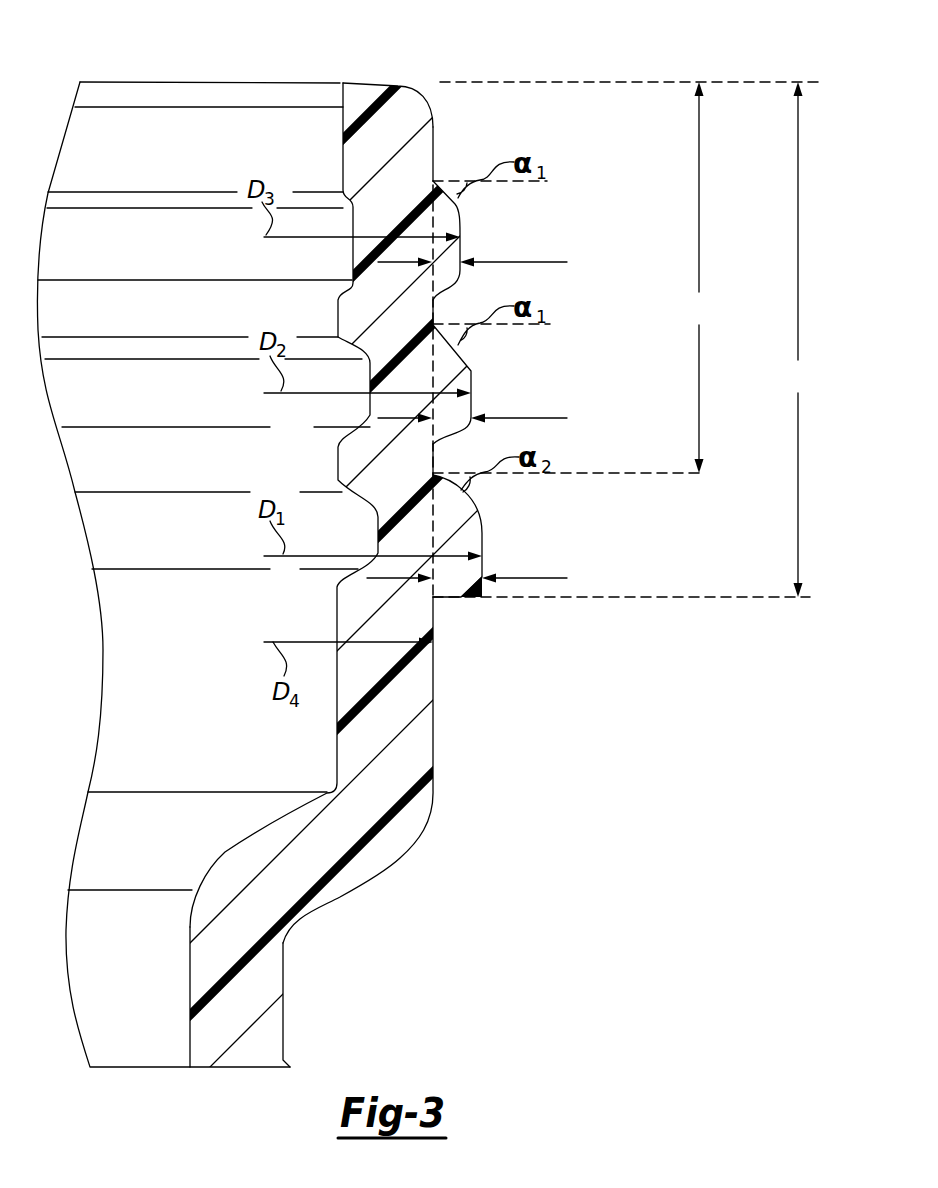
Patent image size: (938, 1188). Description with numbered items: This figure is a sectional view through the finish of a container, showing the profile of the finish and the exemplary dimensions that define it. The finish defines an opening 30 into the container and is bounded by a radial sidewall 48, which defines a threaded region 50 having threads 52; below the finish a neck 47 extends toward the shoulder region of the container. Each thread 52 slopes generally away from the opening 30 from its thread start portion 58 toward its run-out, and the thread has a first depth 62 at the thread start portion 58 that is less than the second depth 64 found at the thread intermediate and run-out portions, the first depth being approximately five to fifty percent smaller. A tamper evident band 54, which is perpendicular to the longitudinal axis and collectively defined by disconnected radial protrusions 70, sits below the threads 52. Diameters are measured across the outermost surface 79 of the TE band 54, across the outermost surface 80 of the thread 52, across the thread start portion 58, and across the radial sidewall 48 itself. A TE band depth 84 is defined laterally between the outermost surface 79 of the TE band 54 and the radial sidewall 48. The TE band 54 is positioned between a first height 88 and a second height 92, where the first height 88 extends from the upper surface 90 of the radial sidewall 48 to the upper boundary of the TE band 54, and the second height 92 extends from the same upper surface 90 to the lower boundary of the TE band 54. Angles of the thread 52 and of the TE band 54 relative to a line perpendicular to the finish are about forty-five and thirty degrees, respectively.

The opening 30 is at (177, 97).
The upper surface 90 is at (374, 83).
The radial sidewall 48 is at (433, 760).
The neck 47 is at (283, 991).
The thread start portion 58 is at (460, 233).
The threaded region 50 is at (505, 244).
The thread 52 is at (472, 386).
The first depth 62 is at (380, 262).
The outermost surface of the thread 80 is at (473, 372).
The second depth 64 is at (378, 418).
The outermost surface of the TE band 79 is at (482, 528).
The tamper evident (TE) band 54 is at (474, 538).
The radial protrusion 70 is at (476, 540).
The TE band depth 84 is at (367, 578).
The first height 88 is at (698, 277).
The second height 92 is at (797, 339).